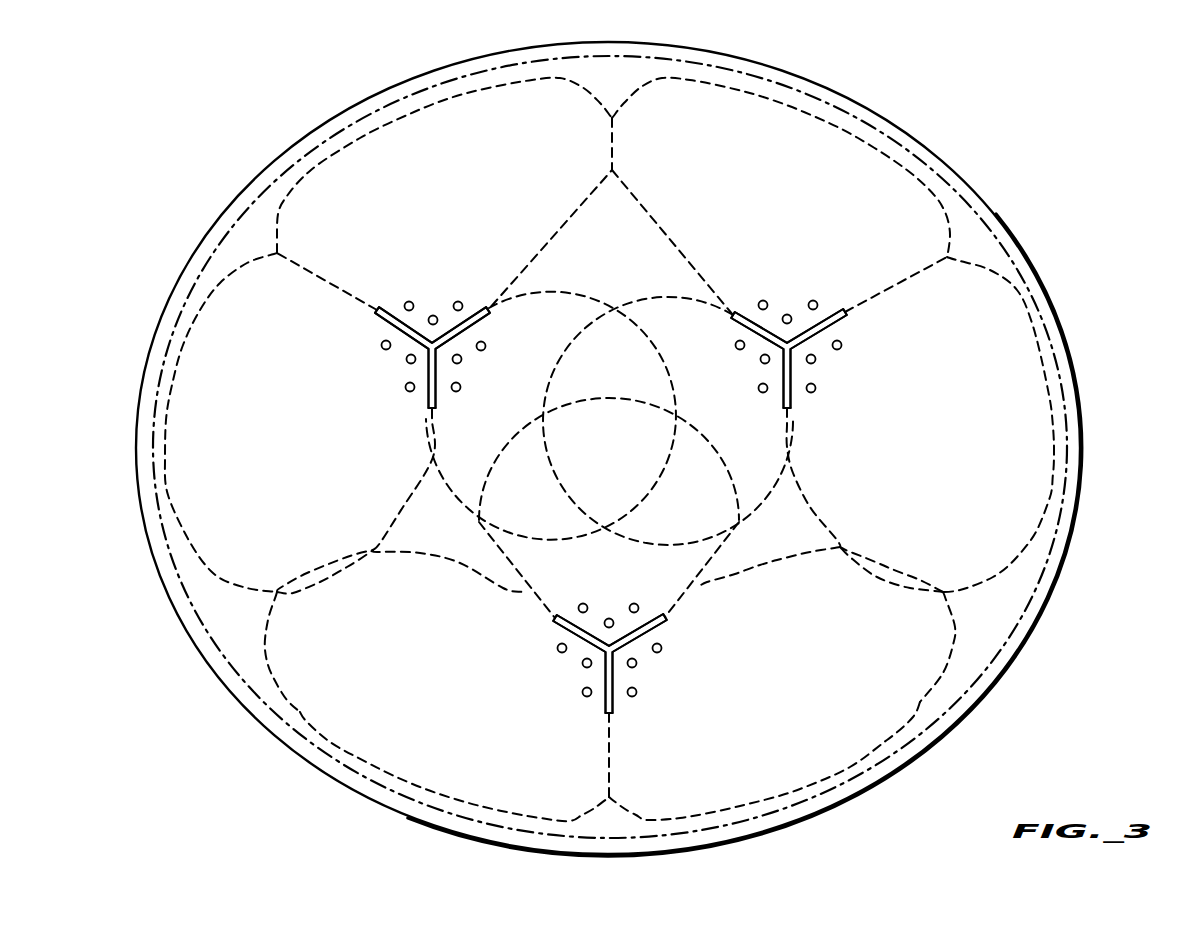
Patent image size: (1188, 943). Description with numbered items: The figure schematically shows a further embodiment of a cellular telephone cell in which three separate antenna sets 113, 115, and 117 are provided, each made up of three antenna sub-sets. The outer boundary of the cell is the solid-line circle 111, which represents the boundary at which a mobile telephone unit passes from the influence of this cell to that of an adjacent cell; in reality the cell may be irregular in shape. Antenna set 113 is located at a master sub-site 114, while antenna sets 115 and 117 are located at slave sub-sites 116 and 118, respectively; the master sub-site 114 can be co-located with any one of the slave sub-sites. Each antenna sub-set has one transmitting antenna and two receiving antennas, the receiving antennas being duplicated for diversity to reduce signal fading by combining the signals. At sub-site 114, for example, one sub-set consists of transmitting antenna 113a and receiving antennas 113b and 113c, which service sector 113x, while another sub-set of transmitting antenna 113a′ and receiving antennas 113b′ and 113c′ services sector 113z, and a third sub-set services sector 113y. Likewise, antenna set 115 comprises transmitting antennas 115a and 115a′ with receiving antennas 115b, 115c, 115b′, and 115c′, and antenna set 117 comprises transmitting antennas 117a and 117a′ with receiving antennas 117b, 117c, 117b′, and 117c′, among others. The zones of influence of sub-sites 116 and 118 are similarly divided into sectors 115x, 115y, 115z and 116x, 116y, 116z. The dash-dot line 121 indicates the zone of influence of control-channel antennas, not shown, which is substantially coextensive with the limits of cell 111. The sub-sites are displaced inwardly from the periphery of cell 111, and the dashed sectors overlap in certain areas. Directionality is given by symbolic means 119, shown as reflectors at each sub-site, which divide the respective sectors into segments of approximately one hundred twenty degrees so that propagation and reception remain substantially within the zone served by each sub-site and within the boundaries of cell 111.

The cell boundary circle 111 is at (866, 105).
The dash-dot line 121 is at (745, 68).
The antenna set 113 is at (548, 676).
The master sub-site 114 is at (714, 669).
The antenna set 115 is at (383, 378).
The sub-site 116 is at (378, 427).
The antenna set 117 is at (837, 378).
The sub-site 118 is at (878, 421).
The directionality means 119 is at (437, 407).
The transmitting antenna 113a is at (585, 668).
The receiving antenna 113b is at (585, 697).
The receiving antenna 113c is at (557, 649).
The transmitting antenna 113a′ is at (634, 668).
The receiving antenna 113b′ is at (659, 644).
The receiving antenna 113c′ is at (633, 697).
The transmitting antenna 115a is at (406, 360).
The receiving antenna 115b is at (410, 392).
The receiving antenna 115c is at (381, 345).
The transmitting antenna 115a′ is at (462, 360).
The receiving antenna 115b′ is at (485, 343).
The receiving antenna 115c′ is at (461, 388).
The transmitting antenna 117a is at (760, 359).
The receiving antenna 117b is at (758, 389).
The receiving antenna 117c is at (737, 342).
The transmitting antenna 117a′ is at (787, 314).
The receiving antenna 117b′ is at (763, 300).
The receiving antenna 117c′ is at (813, 300).
The sector 113x is at (303, 710).
The sector 113y is at (710, 498).
The sector 113z is at (922, 700).
The sector 115x is at (173, 407).
The sector 115y is at (582, 88).
The sector 115z is at (590, 517).
The sector 116x is at (576, 358).
The sector 116y is at (650, 212).
The sector 116z is at (1028, 372).